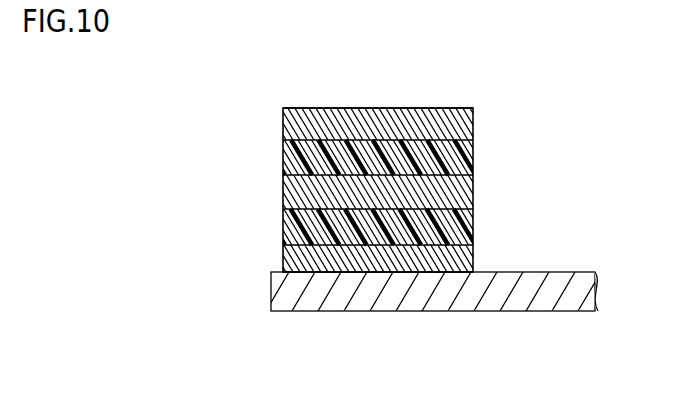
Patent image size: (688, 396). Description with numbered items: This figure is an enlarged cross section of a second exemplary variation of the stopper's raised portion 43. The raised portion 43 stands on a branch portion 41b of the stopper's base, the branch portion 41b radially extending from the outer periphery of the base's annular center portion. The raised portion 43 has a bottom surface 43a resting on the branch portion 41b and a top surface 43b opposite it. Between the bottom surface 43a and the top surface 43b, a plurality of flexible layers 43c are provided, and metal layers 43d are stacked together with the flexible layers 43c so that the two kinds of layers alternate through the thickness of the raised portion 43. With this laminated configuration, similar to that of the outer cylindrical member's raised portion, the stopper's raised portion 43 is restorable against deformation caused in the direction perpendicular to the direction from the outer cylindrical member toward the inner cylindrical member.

The branch portion 41b is at (407, 299).
The stopper's raised portion 43 is at (486, 177).
The bottom surface 43a is at (447, 272).
The top surface 43b is at (447, 108).
The flexible layer 43c is at (292, 161).
The metal layer 43d is at (292, 125).